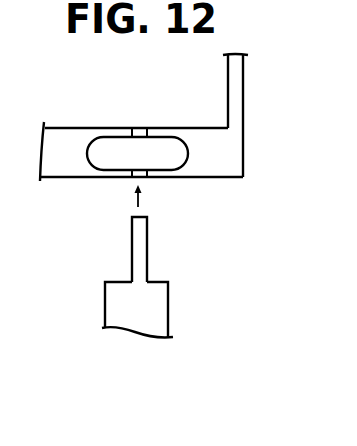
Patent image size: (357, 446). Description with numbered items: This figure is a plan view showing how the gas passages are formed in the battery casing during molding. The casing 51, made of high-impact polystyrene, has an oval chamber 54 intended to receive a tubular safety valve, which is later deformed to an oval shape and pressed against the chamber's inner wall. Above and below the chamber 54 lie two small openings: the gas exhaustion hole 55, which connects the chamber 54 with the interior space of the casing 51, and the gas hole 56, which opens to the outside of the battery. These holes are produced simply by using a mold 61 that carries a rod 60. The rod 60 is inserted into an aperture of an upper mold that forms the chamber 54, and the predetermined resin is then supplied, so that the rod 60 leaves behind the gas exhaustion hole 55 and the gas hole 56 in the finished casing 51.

The casing 51 is at (236, 100).
The oval chamber 54 is at (180, 155).
The gas exhaustion hole 55 is at (140, 134).
The gas hole 56 is at (142, 175).
The rod 60 is at (135, 248).
The mold 61 is at (113, 307).